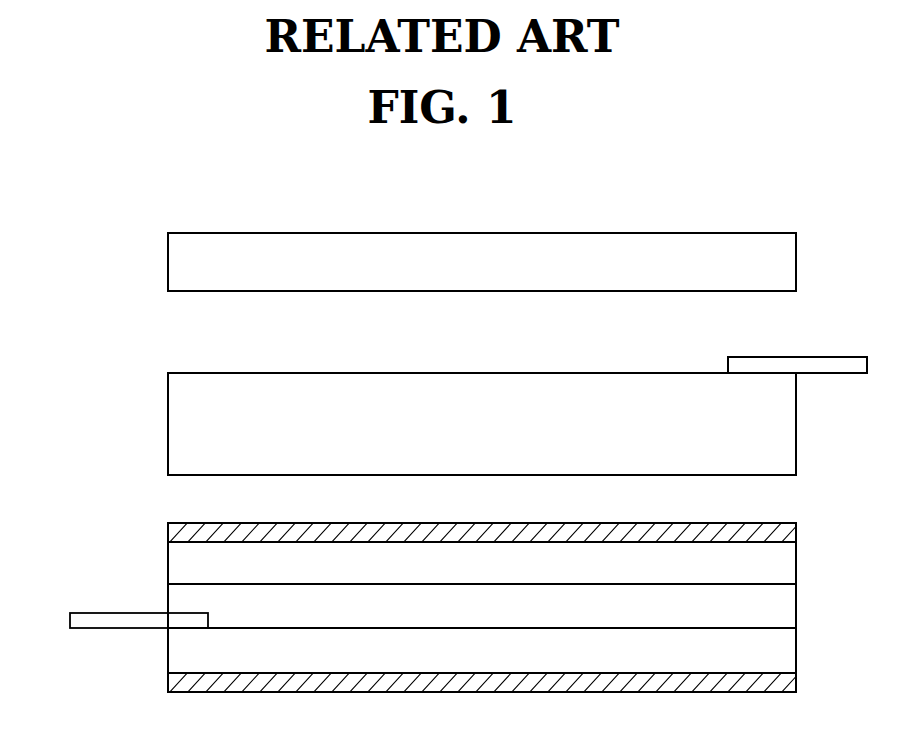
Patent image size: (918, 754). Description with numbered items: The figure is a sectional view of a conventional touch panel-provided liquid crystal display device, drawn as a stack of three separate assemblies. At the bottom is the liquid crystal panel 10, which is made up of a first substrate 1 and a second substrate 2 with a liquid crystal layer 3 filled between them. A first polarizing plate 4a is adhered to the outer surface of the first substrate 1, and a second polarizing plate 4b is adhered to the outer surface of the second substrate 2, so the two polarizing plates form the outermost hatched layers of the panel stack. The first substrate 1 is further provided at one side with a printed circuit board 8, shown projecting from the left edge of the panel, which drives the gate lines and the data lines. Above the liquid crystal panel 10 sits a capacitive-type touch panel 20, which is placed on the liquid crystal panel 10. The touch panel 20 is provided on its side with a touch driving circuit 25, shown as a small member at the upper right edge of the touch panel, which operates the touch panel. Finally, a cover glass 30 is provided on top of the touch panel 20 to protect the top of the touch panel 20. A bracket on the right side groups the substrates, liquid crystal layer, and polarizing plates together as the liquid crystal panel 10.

The cover glass 30 is at (181, 265).
The touch panel 20 is at (181, 427).
The touch driving circuit 25 is at (837, 361).
The liquid crystal panel 10 is at (812, 523).
The second polarizing plate 4b is at (182, 536).
The second substrate 2 is at (182, 562).
The liquid crystal layer 3 is at (182, 592).
The printed circuit board 8 is at (70, 620).
The first substrate 1 is at (182, 652).
The first polarizing plate 4a is at (182, 686).